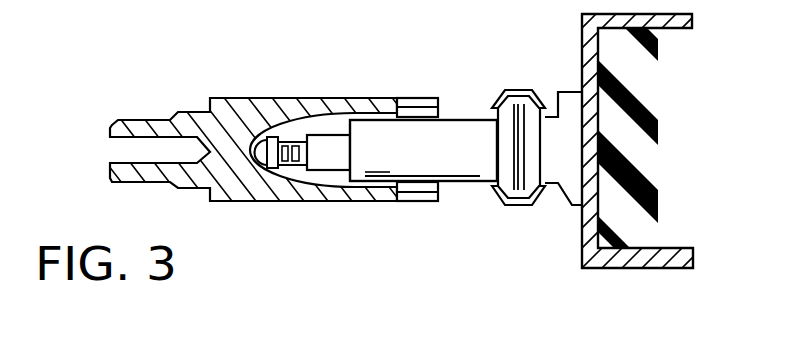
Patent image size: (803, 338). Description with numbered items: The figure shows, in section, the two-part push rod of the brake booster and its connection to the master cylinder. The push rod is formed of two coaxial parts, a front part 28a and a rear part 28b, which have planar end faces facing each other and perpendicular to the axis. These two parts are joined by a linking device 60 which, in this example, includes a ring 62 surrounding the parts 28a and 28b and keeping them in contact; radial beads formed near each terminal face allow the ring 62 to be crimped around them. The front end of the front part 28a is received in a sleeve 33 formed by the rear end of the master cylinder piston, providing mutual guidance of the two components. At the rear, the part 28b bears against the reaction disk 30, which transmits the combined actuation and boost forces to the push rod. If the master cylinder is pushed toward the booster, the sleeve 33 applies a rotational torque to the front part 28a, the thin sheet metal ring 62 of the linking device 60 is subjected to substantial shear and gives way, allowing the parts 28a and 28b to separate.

The sleeve 33 is at (228, 99).
The front part of the push rod 28a is at (462, 109).
The rear part of the push rod 28b is at (560, 98).
The reaction disk 30 is at (674, 167).
The ring 62 is at (513, 223).
The linking device 60 is at (550, 269).